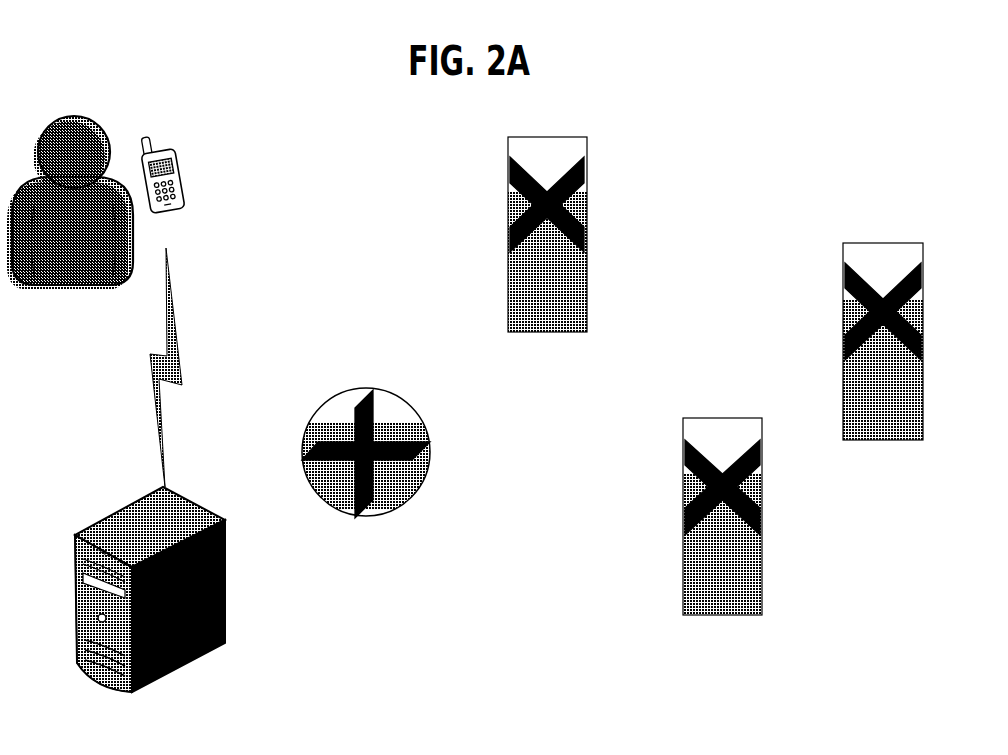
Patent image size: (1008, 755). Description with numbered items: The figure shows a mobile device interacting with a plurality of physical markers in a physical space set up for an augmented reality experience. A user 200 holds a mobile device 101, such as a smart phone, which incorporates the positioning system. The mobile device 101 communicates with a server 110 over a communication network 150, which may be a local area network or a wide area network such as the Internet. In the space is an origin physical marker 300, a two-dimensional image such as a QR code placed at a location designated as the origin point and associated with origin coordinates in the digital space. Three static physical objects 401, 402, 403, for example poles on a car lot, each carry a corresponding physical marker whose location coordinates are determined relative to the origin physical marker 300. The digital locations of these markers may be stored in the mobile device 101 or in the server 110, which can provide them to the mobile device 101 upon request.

The user 200 is at (60, 315).
The mobile device 101 is at (139, 247).
The communication network 150 is at (102, 383).
The server 110 is at (132, 724).
The origin physical marker 300 is at (348, 548).
The physical object 401 is at (530, 363).
The physical object 402 is at (705, 643).
The physical object 403 is at (865, 468).